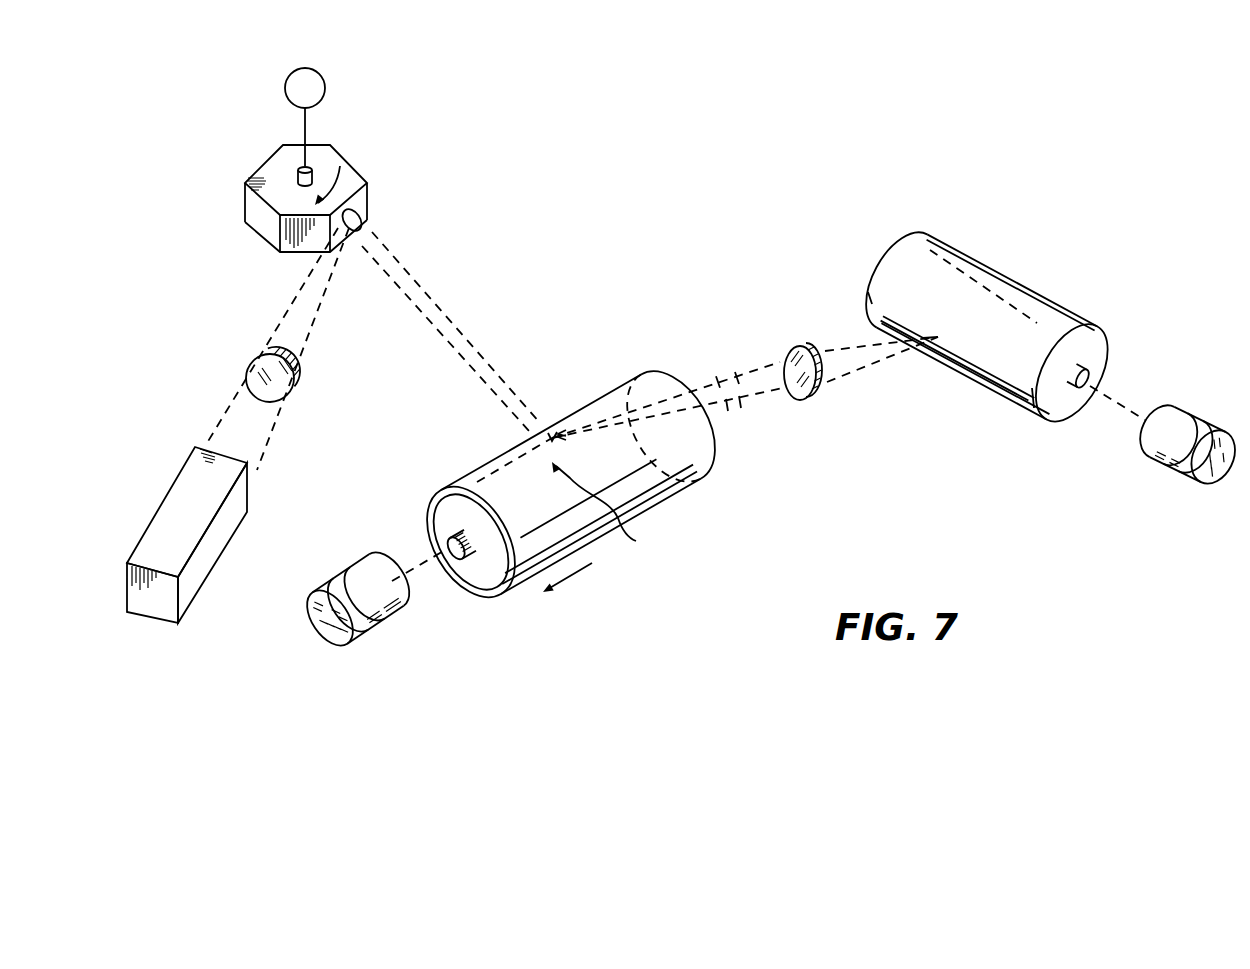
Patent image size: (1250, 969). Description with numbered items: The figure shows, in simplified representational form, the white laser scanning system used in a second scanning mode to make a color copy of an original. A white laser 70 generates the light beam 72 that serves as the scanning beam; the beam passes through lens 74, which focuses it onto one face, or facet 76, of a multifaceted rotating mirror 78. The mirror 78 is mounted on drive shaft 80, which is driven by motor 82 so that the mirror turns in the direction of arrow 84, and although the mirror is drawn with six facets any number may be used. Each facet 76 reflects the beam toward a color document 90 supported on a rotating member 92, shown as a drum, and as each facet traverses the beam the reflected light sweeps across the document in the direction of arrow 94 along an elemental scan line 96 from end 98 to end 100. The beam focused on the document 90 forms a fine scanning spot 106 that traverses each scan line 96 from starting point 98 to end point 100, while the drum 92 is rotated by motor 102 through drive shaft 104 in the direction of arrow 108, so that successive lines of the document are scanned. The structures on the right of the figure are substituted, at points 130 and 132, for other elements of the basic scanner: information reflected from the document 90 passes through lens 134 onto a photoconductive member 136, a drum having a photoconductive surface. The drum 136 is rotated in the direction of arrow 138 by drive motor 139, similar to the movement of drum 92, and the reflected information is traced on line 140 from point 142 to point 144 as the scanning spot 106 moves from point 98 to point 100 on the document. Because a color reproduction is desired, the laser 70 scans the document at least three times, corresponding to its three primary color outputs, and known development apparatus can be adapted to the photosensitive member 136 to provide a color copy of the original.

The white laser 70 is at (235, 505).
The light beam 72 is at (271, 420).
The lens 74 is at (291, 379).
The facet 76 is at (362, 210).
The multifaceted rotating mirror 78 is at (340, 151).
The drive shaft 80 is at (307, 130).
The motor 82 is at (326, 84).
The arrow 84 is at (342, 167).
The color document 90 is at (476, 591).
The rotating member 92 is at (490, 579).
The arrow 94 is at (588, 566).
The scan line 96 is at (608, 410).
The end 98 is at (667, 373).
The end 100 is at (468, 485).
The motor 102 is at (312, 594).
The drive shaft 104 is at (447, 547).
The scanning spot 106 is at (553, 436).
The arrow 108 is at (615, 507).
The point 130 is at (727, 377).
The point 132 is at (733, 410).
The lens 134 is at (810, 398).
The photoconductive member 136 is at (1064, 291).
The arrow 138 is at (985, 344).
The drive motor 139 is at (1165, 412).
The line 140 is at (978, 372).
The point 142 is at (870, 298).
The point 144 is at (1032, 392).